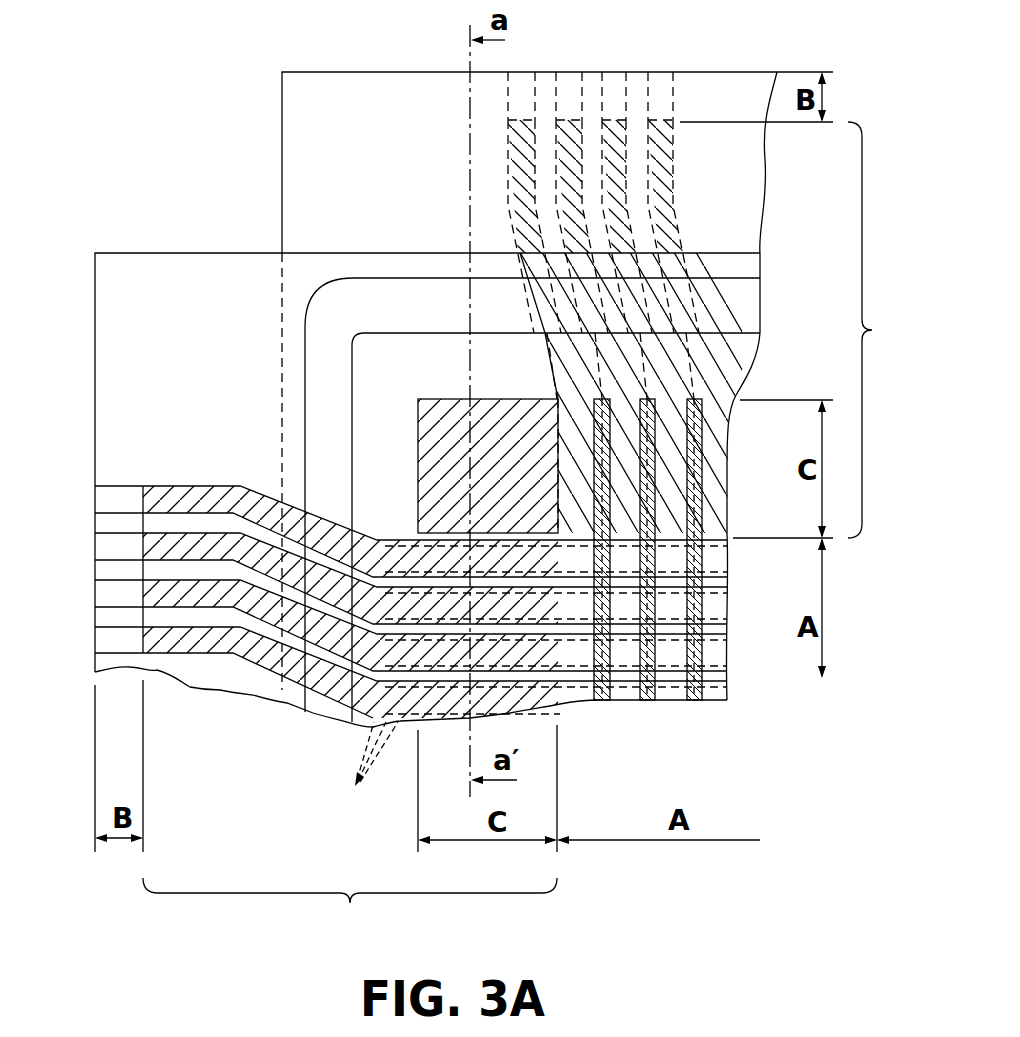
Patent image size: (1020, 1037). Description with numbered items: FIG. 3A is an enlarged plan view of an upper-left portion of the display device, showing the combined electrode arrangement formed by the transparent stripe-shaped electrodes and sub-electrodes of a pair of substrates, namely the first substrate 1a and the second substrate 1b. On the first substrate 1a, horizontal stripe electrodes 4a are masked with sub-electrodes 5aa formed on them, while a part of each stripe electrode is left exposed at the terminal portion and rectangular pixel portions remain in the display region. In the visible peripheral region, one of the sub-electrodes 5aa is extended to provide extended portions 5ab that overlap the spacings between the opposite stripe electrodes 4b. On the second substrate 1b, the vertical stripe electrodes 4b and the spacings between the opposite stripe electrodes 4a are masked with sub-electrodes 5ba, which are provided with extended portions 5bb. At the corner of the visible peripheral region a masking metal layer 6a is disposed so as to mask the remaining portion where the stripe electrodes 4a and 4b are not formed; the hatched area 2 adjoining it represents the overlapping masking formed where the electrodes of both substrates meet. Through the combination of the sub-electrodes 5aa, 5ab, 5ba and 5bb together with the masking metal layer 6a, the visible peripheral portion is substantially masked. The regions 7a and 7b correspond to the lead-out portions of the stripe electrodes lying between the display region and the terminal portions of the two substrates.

The first substrate 1a is at (172, 266).
The second substrate 1b is at (360, 92).
The wiring layer region 2 is at (746, 313).
The stripe electrodes 4a is at (108, 500).
The stripe electrodes 4b is at (569, 84).
The sub-electrodes 5aa is at (150, 491).
The extended portions 5ab is at (692, 392).
The sub-electrodes 5ba is at (630, 134).
The extended portions 5bb is at (367, 771).
The masking metal layer 6a is at (433, 476).
The region of lead-out portions 7a is at (350, 909).
The region of lead-out portions 7b is at (880, 330).